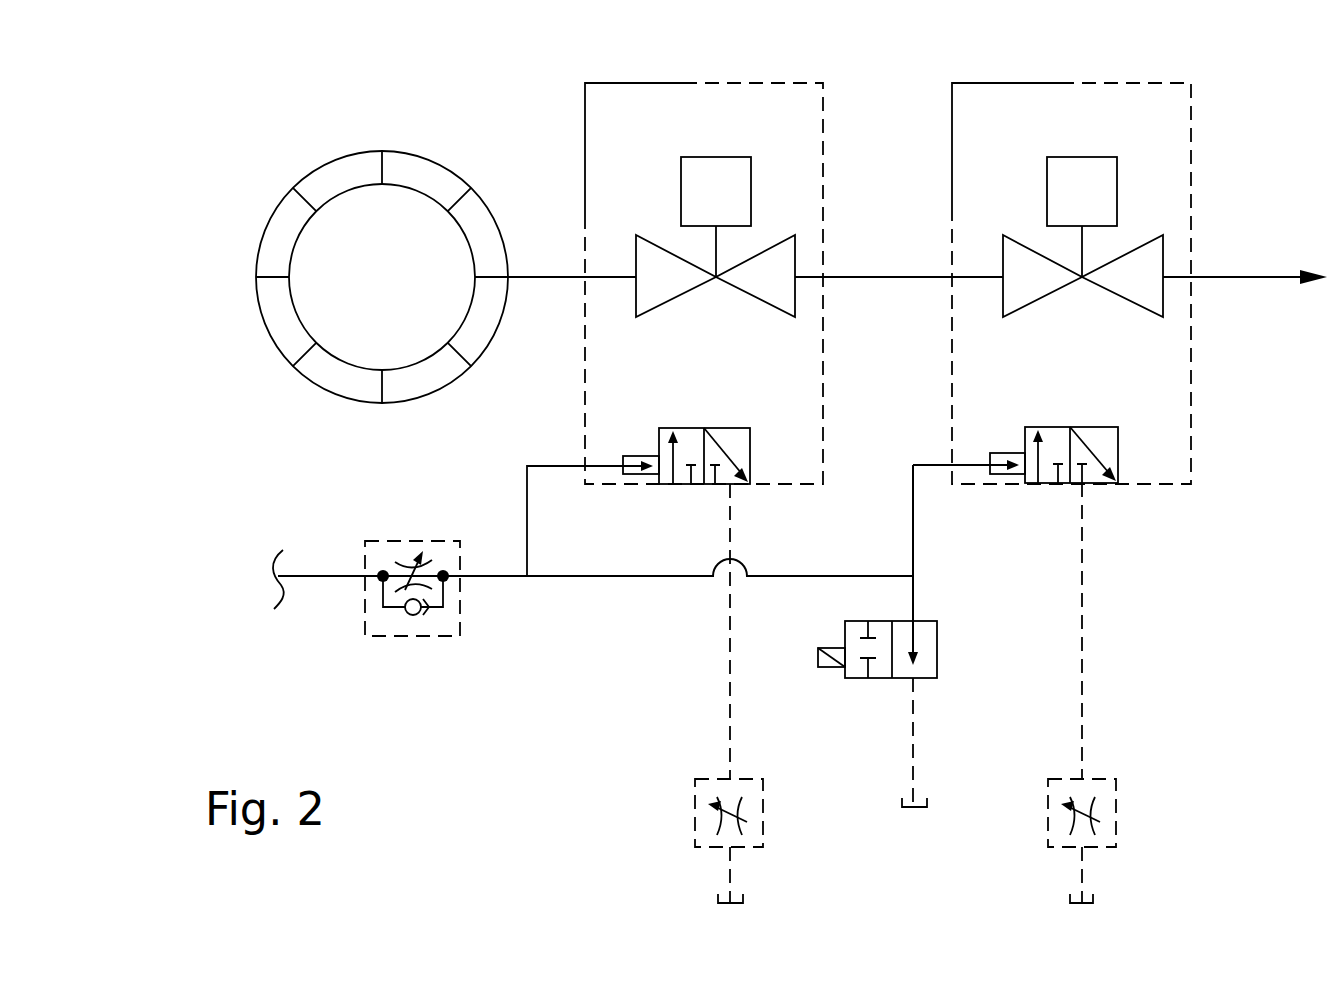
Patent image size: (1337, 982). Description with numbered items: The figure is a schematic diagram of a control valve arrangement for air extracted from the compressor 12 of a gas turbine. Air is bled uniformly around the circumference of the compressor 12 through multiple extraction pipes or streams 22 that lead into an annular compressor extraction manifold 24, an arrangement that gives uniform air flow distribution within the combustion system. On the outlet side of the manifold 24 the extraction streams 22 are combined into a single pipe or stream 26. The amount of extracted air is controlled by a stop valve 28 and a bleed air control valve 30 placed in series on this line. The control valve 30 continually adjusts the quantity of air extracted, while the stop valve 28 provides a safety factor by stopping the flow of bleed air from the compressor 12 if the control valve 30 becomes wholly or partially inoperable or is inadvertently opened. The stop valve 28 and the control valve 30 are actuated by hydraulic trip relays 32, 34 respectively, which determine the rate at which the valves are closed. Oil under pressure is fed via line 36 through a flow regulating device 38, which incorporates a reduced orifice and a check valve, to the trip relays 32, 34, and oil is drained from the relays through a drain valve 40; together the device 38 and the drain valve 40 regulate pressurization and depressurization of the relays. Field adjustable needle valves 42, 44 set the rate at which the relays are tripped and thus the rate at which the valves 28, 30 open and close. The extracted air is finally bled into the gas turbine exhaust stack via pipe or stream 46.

The compressor 12 is at (290, 315).
The extraction pipes or streams 22 is at (392, 152).
The annular compressor extraction manifold 24 is at (341, 393).
The single pipe or stream 26 is at (547, 278).
The stop valve 28 is at (575, 135).
The bleed air control valve 30 is at (1200, 130).
The hydraulic trip relay 32 is at (677, 484).
The hydraulic trip relay 34 is at (1065, 483).
The line 36 is at (315, 577).
The flow regulating device 38 is at (365, 601).
The drain valve 40 is at (925, 641).
The field adjustable needle valve 42 is at (695, 788).
The field adjustable needle valve 44 is at (1047, 792).
The pipe or stream 46 is at (1257, 272).